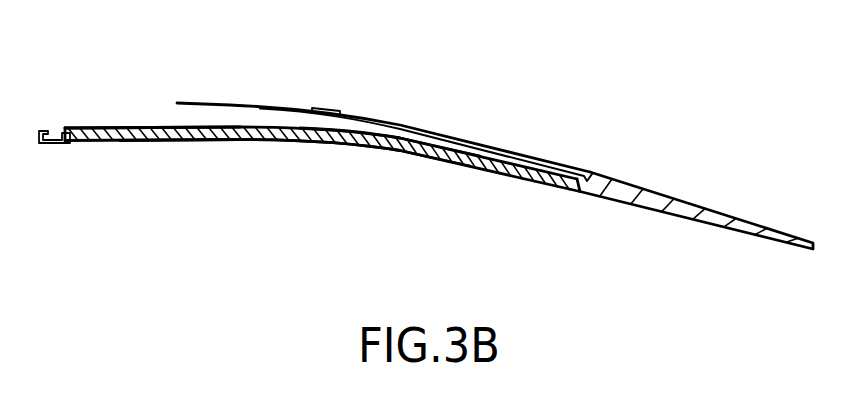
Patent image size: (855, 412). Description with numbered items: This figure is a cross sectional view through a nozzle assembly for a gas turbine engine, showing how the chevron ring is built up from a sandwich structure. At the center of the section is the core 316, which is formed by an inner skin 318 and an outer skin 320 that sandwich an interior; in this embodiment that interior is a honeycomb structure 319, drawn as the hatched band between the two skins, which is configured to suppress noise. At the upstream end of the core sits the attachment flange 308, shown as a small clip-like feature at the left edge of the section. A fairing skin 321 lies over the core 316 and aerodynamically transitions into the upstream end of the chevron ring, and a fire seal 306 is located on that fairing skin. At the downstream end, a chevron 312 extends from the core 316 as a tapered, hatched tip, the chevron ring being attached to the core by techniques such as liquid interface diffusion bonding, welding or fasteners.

The fire seal 306 is at (272, 68).
The attachment flange 308 is at (54, 145).
The chevron 312 is at (694, 209).
The core 316 is at (193, 142).
The inner skin 318 is at (117, 142).
The honeycomb structure 319 is at (390, 141).
The outer skin 320 is at (90, 128).
The fairing skin 321 is at (438, 130).